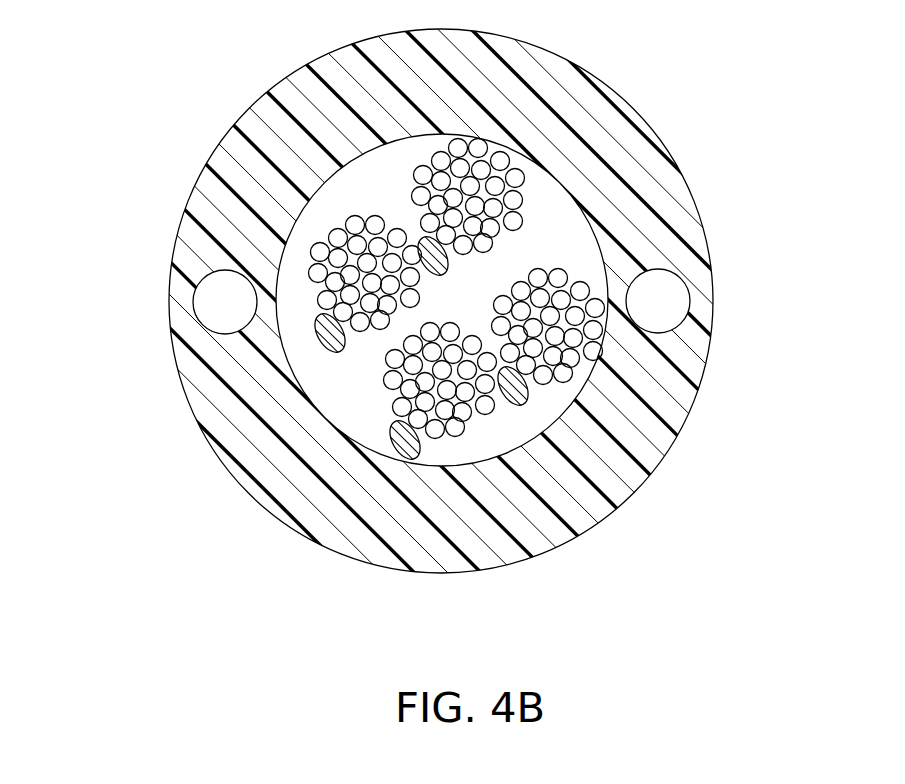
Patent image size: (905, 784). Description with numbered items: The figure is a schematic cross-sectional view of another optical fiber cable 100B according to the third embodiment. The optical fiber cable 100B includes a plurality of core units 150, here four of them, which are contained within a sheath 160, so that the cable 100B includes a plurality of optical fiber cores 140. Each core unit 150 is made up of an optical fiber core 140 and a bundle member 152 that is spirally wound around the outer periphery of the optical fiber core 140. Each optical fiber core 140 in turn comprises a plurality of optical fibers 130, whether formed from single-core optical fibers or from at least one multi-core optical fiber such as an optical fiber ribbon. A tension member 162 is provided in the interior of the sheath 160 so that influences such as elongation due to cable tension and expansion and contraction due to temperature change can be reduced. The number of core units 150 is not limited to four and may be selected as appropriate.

The optical fiber cable 100B is at (240, 55).
The optical fibers 130 is at (504, 398).
The optical fiber core 140 is at (312, 250).
The core unit 150 is at (118, 248).
The bundle member 152 is at (318, 343).
The sheath 160 is at (676, 413).
The tension member 162 is at (693, 296).